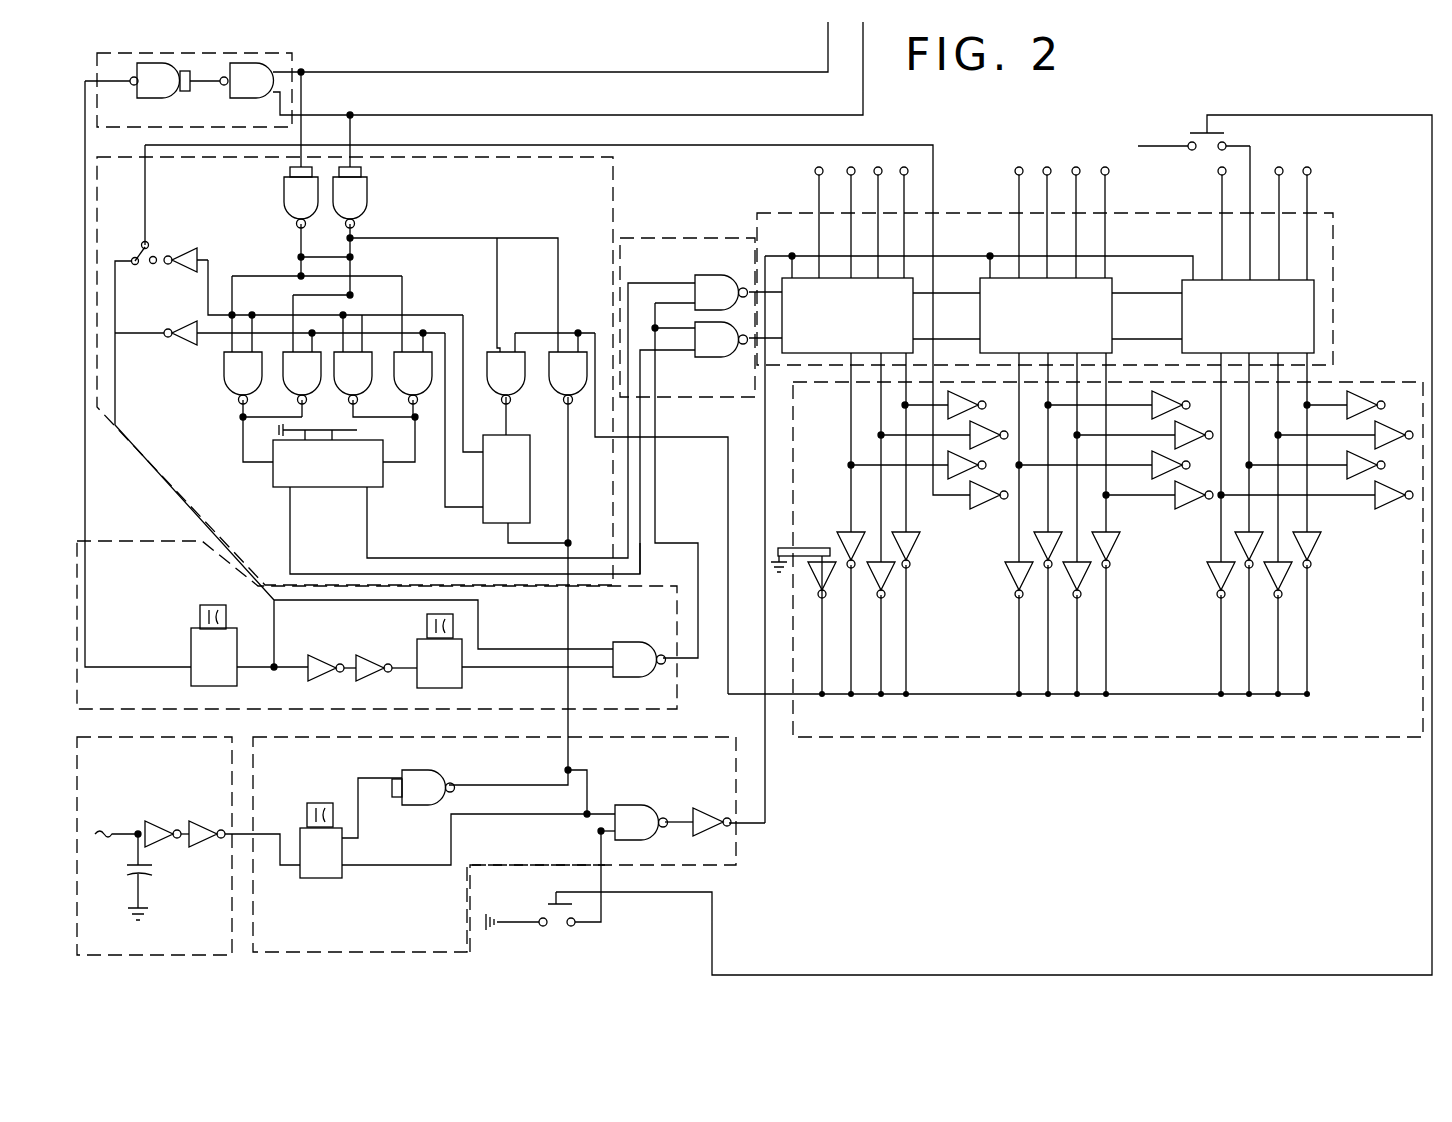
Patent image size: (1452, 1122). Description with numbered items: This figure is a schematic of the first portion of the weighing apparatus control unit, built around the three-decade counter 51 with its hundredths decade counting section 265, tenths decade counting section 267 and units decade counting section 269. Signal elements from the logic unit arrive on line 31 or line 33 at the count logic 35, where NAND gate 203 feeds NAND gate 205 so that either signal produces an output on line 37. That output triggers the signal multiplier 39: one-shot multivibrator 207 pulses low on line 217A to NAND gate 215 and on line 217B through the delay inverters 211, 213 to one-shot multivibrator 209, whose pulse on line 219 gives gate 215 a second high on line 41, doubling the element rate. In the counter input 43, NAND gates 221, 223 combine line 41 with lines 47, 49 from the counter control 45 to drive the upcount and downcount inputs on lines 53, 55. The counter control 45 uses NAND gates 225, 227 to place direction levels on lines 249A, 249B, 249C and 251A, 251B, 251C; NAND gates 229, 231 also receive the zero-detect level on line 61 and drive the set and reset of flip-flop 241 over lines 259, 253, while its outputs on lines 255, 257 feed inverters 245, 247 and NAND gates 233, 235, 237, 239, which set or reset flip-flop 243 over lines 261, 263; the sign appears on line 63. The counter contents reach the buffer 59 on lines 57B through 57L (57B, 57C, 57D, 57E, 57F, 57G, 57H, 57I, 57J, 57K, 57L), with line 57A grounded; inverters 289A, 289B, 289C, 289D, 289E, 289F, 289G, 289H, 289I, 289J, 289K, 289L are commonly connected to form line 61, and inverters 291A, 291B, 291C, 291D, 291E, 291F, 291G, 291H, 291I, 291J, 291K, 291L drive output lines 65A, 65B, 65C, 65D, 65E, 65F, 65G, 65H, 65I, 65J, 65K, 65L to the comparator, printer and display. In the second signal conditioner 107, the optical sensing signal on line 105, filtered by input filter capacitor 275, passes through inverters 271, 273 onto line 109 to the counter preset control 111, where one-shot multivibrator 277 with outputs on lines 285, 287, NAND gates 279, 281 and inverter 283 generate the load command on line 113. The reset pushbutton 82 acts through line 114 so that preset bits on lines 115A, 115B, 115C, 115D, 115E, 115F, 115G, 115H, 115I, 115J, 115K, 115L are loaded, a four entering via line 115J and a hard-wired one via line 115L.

The line 31 is at (692, 75).
The line 33 is at (570, 115).
The count logic 35 is at (300, 70).
The line 37 is at (97, 238).
The signal multiplier 39 is at (122, 541).
The line 41 is at (660, 303).
The counter input 43 is at (662, 238).
The counter control 45 is at (615, 205).
The line 47 is at (640, 522).
The line 49 is at (645, 520).
The counter 51 is at (1333, 265).
The line 53 is at (757, 250).
The line 55 is at (765, 385).
The line 57A is at (779, 548).
The line 57B is at (851, 425).
The line 57C is at (881, 430).
The line 57D is at (906, 390).
The line 57E is at (1015, 372).
The line 57F is at (1005, 479).
The line 57G is at (1080, 510).
The line 57H is at (1106, 390).
The line 57I is at (1205, 390).
The line 57J is at (1249, 403).
The line 57K is at (1344, 402).
The line 57L is at (1310, 380).
The buffer 59 is at (1400, 385).
The line 61 is at (748, 696).
The line 63 is at (530, 157).
The line 65A is at (1010, 498).
The line 65B is at (1038, 464).
The line 65C is at (1039, 442).
The line 65D is at (948, 431).
The line 65E is at (1212, 500).
The line 65F is at (1205, 477).
The line 65G is at (1206, 449).
The line 65H is at (1193, 392).
The line 65I is at (1404, 474).
The line 65J is at (1404, 444).
The line 65K is at (1416, 414).
The line 65L is at (1406, 387).
The reset pushbutton 82 is at (1205, 133).
The line 105 is at (98, 834).
The second signal conditioner 107 is at (218, 740).
The line 109 is at (260, 830).
The counter preset control 111 is at (740, 838).
The line 113 is at (765, 810).
The line 114 is at (585, 926).
The line 115A is at (819, 180).
The line 115B is at (848, 172).
The line 115C is at (870, 170).
The line 115D is at (908, 170).
The line 115E is at (1019, 180).
The line 115F is at (1045, 172).
The line 115G is at (1078, 170).
The line 115H is at (1120, 158).
The line 115I is at (1222, 185).
The line 115J is at (1252, 170).
The line 115K is at (1282, 170).
The line 115L is at (1310, 180).
The NAND gate 203 is at (270, 98).
The NAND gate 205 is at (168, 98).
The one-shot multivibrator 207 is at (191, 650).
The one-shot multivibrator 209 is at (465, 680).
The inverter 211 is at (320, 680).
The inverter 213 is at (370, 680).
The NAND gate 215 is at (662, 628).
The line 217A is at (262, 595).
The line 217B is at (300, 672).
The line 219 is at (522, 672).
The NAND gate 221 is at (740, 278).
The NAND gate 223 is at (738, 357).
The NAND gate 225 is at (283, 212).
The NAND gate 227 is at (368, 212).
The NAND gate 229 is at (530, 345).
The NAND gate 231 is at (595, 345).
The NAND gate 233 is at (236, 390).
The NAND gate 235 is at (290, 378).
The NAND gate 237 is at (345, 382).
The NAND gate 239 is at (405, 382).
The flip-flop 241 is at (483, 512).
The flip-flop 243 is at (288, 490).
The inverter 245 is at (190, 345).
The inverter 247 is at (197, 252).
The line 249A is at (497, 290).
The line 249B is at (232, 280).
The line 249C is at (400, 318).
The line 251A is at (488, 238).
The line 251B is at (350, 290).
The line 251C is at (350, 312).
The line 253 is at (568, 430).
The line 255 is at (445, 490).
The line 257 is at (466, 403).
The line 259 is at (506, 415).
The line 261 is at (243, 430).
The line 263 is at (415, 428).
The hundredths decade counting section 265 is at (847, 315).
The tenths decade counting section 267 is at (1046, 315).
The units decade counting section 269 is at (1248, 316).
The inverter 271 is at (160, 820).
The inverter 273 is at (220, 822).
The input filter capacitor 275 is at (132, 868).
The one-shot multivibrator 277 is at (340, 900).
The NAND gate 279 is at (412, 772).
The NAND gate 281 is at (660, 787).
The inverter 283 is at (693, 810).
The line 285 is at (378, 795).
The line 287 is at (440, 880).
The inverter 289A is at (838, 518).
The inverter 289B is at (851, 520).
The inverter 289C is at (885, 600).
The inverter 289D is at (910, 570).
The inverter 289E is at (1012, 580).
The inverter 289F is at (1045, 570).
The inverter 289G is at (1085, 590).
The inverter 289H is at (1118, 545).
The inverter 289I is at (1225, 595).
The inverter 289J is at (1249, 545).
The inverter 289K is at (1290, 580).
The inverter 289L is at (1320, 555).
The inverter 291A is at (1000, 505).
The inverter 291B is at (952, 480).
The inverter 291C is at (933, 462).
The inverter 291D is at (959, 402).
The inverter 291E is at (1158, 492).
The inverter 291F is at (1103, 462).
The inverter 291G is at (1143, 432).
The inverter 291H is at (1117, 402).
The inverter 291I is at (1400, 505).
The inverter 291J is at (1315, 491).
The inverter 291K is at (1315, 461).
The inverter 291L is at (1344, 432).